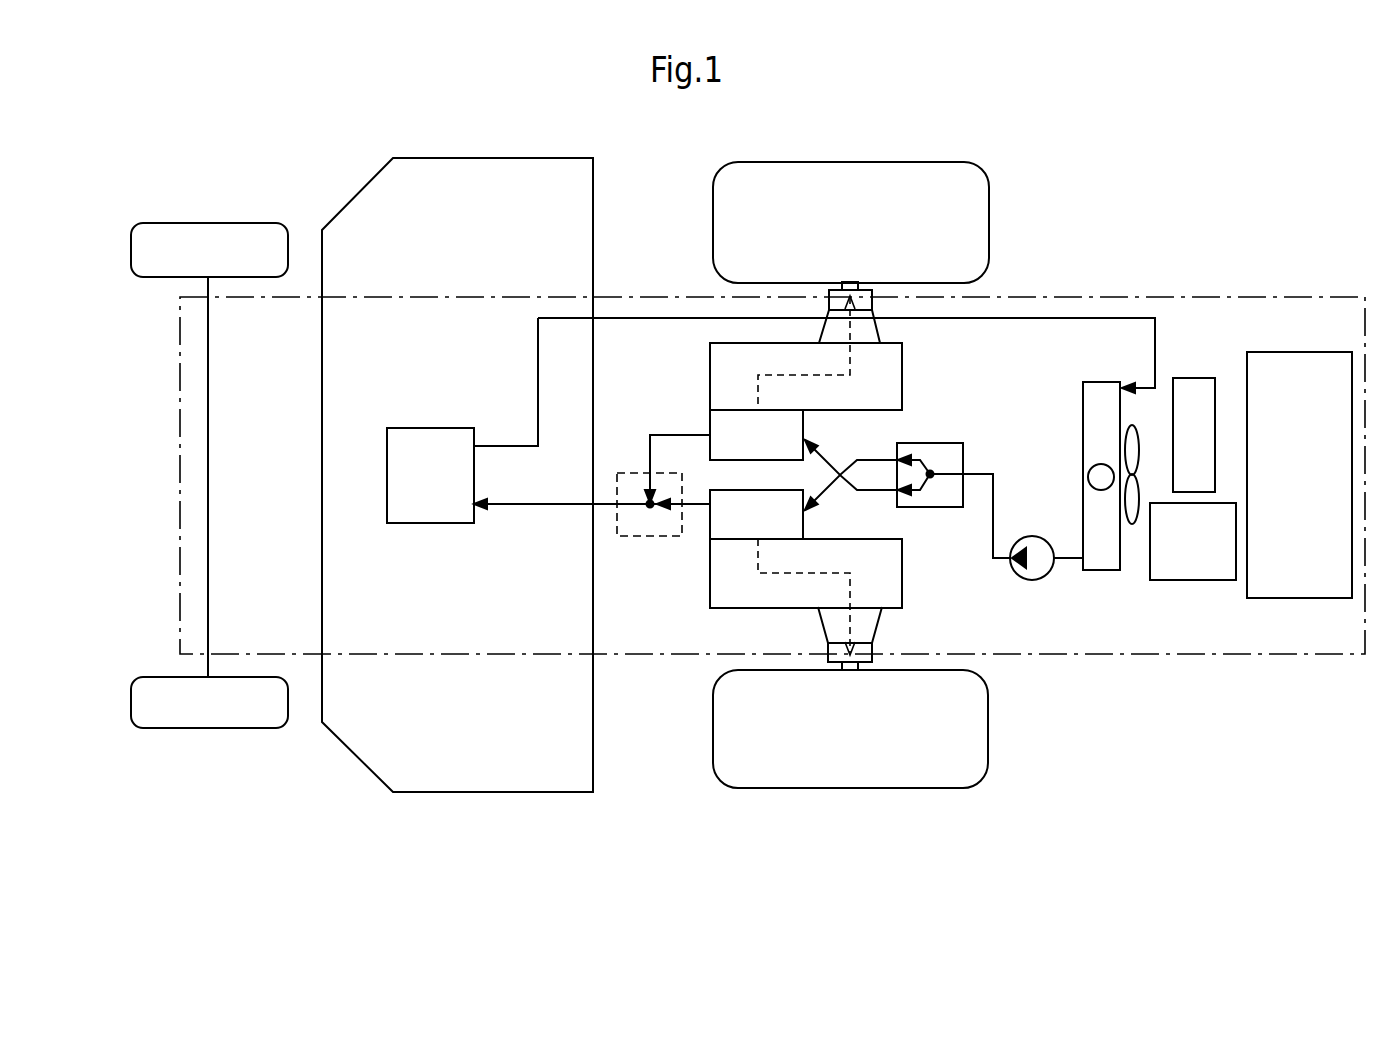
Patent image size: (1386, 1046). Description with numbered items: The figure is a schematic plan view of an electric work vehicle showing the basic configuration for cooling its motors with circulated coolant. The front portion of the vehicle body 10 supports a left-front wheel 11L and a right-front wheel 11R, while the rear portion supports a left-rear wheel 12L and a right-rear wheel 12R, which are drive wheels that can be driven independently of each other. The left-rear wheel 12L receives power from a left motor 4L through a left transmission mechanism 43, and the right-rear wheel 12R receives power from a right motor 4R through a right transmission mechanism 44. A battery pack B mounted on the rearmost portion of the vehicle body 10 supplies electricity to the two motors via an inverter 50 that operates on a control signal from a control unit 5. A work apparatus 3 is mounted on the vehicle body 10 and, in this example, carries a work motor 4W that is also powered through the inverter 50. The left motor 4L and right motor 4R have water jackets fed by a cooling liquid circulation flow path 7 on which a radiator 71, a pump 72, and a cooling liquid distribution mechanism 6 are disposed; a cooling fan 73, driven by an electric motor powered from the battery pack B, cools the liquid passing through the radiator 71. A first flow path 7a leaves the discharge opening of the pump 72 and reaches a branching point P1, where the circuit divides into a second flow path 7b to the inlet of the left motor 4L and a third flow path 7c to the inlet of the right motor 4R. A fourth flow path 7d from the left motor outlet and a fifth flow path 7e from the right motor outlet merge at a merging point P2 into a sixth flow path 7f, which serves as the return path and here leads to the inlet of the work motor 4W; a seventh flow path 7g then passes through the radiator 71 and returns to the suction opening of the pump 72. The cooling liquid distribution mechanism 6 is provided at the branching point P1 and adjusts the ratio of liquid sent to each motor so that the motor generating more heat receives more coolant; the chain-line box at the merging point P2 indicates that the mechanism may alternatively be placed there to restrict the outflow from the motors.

The work apparatus 3 is at (412, 797).
The vehicle body 10 is at (180, 368).
The right-front wheel 11R is at (188, 223).
The left-front wheel 11L is at (204, 722).
The right-rear wheel 12R is at (840, 162).
The left-rear wheel 12L is at (842, 788).
The right motor 4R is at (803, 423).
The left motor 4L is at (798, 525).
The work motor 4W is at (433, 515).
The right transmission mechanism 44 is at (758, 393).
The left transmission mechanism 43 is at (758, 570).
The control unit 5 is at (1188, 580).
The inverter 50 is at (1193, 378).
The battery pack B is at (1293, 352).
The cooling liquid distribution mechanism 6 is at (632, 472).
The cooling liquid circulation flow path 7 is at (1060, 316).
The first flow path 7a is at (993, 513).
The second flow path 7b is at (867, 458).
The third flow path 7c is at (870, 492).
The fourth flow path 7d is at (695, 507).
The fifth flow path 7e is at (668, 434).
The sixth flow path 7f is at (552, 507).
The seventh flow path 7g is at (538, 365).
The radiator 71 is at (1088, 407).
The pump 72 is at (1032, 580).
The cooling fan 73 is at (1130, 525).
The branching point P1 is at (930, 478).
The merging point P2 is at (650, 508).